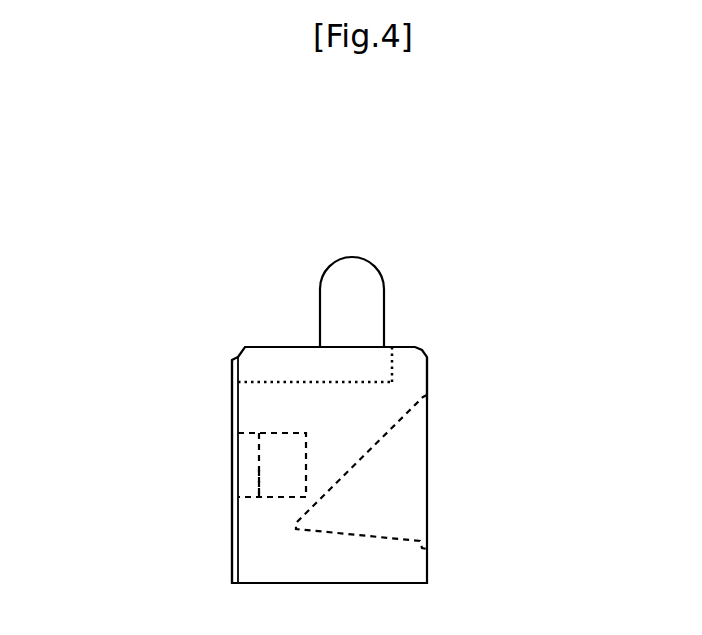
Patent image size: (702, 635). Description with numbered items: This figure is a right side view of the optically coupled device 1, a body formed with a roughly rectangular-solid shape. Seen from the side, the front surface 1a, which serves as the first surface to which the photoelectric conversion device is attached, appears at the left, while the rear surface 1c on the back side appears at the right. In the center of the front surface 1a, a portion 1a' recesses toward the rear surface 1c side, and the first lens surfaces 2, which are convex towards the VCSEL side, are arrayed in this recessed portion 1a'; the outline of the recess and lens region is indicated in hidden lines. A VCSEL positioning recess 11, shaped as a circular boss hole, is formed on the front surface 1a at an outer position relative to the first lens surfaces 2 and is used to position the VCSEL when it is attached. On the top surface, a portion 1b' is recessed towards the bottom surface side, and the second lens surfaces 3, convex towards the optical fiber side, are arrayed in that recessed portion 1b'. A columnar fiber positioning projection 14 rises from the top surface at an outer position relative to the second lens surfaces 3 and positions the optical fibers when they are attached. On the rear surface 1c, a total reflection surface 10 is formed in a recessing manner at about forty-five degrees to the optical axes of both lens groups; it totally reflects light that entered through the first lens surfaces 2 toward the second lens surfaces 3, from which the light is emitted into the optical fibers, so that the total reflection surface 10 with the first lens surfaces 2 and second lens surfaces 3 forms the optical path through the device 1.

The optically coupled device 1 is at (160, 222).
The fiber positioning projection 14 is at (350, 256).
The second lens surface 3 is at (351, 381).
The recessed portion of the top surface 1b' is at (418, 307).
The rear surface 1c is at (427, 372).
The total reflection surface 10 is at (376, 440).
The first lens surface 2 is at (259, 467).
The recessed portion of the front surface 1a' is at (186, 448).
The VCSEL positioning recess 11 is at (306, 469).
The front surface 1a is at (172, 475).